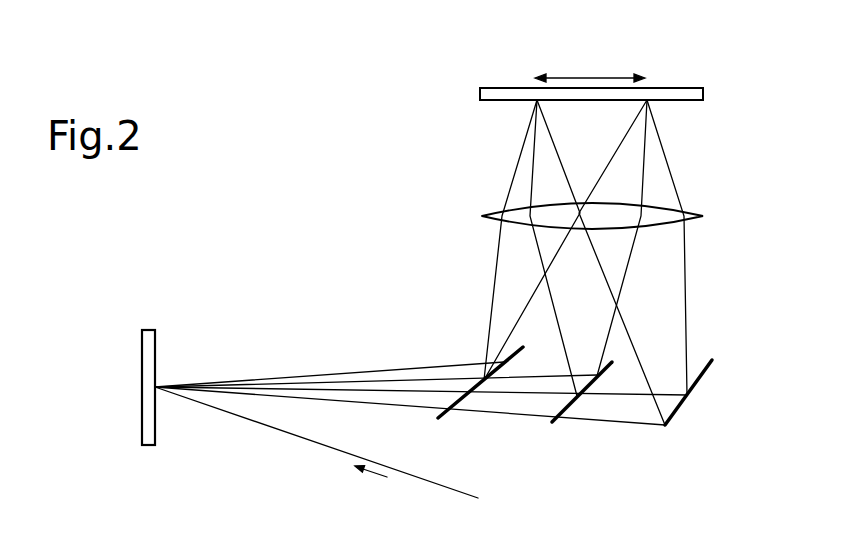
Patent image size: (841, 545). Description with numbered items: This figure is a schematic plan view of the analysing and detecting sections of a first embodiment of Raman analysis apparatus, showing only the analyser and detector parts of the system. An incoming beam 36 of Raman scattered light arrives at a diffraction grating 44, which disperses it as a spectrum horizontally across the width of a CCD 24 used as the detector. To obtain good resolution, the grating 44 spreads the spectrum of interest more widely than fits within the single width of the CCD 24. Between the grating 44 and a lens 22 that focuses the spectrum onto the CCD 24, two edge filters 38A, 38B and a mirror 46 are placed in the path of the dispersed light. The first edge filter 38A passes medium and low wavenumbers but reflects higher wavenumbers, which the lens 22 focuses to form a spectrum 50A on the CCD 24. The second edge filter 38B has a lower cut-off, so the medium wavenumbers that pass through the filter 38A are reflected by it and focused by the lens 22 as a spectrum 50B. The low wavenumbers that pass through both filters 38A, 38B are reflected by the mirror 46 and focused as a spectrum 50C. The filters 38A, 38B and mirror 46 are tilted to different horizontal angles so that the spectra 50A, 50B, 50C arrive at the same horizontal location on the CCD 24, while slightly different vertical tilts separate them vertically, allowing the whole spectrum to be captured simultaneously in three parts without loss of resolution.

The CCD 24 is at (480, 91).
The spectrum 50A is at (620, 56).
The spectrum 50B is at (620, 56).
The spectrum 50C is at (585, 77).
The lens 22 is at (487, 212).
The diffraction grating 44 is at (150, 328).
The incoming beam 36 is at (291, 435).
The edge filter 38A is at (464, 400).
The edge filter 38B is at (568, 405).
The mirror 46 is at (708, 370).